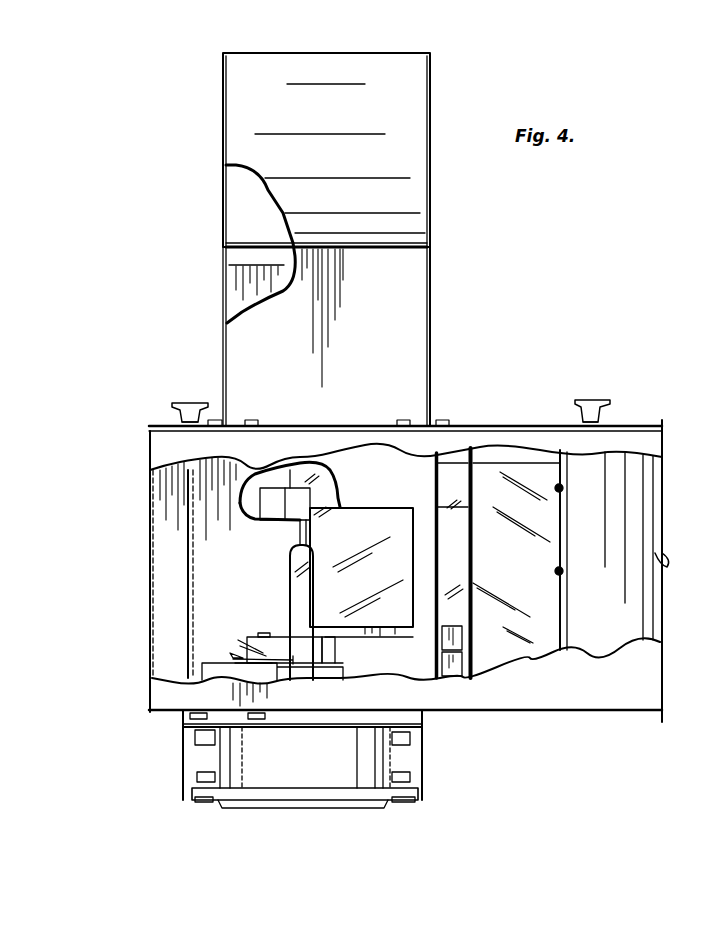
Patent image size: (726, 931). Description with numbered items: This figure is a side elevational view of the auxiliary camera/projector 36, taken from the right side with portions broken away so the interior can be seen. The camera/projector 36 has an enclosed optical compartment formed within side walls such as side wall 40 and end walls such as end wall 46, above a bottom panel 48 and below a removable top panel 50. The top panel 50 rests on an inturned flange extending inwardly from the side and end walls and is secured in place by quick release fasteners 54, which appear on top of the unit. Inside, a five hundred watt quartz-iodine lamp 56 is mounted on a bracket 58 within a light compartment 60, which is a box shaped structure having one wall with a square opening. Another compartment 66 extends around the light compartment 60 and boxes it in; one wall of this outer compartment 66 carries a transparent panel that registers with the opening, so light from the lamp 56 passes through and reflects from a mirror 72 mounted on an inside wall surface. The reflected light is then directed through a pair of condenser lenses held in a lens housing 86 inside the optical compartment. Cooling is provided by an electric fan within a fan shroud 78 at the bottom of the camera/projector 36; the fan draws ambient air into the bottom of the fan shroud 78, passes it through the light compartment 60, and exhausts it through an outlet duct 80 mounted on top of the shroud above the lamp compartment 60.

The auxiliary camera/projector 36 is at (142, 672).
The side wall 40 is at (648, 675).
The end wall 46 is at (150, 568).
The bottom panel 48 is at (526, 712).
The removable top panel 50 is at (483, 422).
The quick release fasteners 54 is at (190, 403).
The quartz-iodine lamp 56 is at (290, 568).
The bracket 58 is at (343, 663).
The light compartment 60 is at (193, 541).
The outer compartment 66 is at (474, 553).
The mirror 72 is at (549, 490).
The fan shroud 78 is at (330, 775).
The outlet duct 80 is at (428, 221).
The lens housing 86 is at (648, 514).